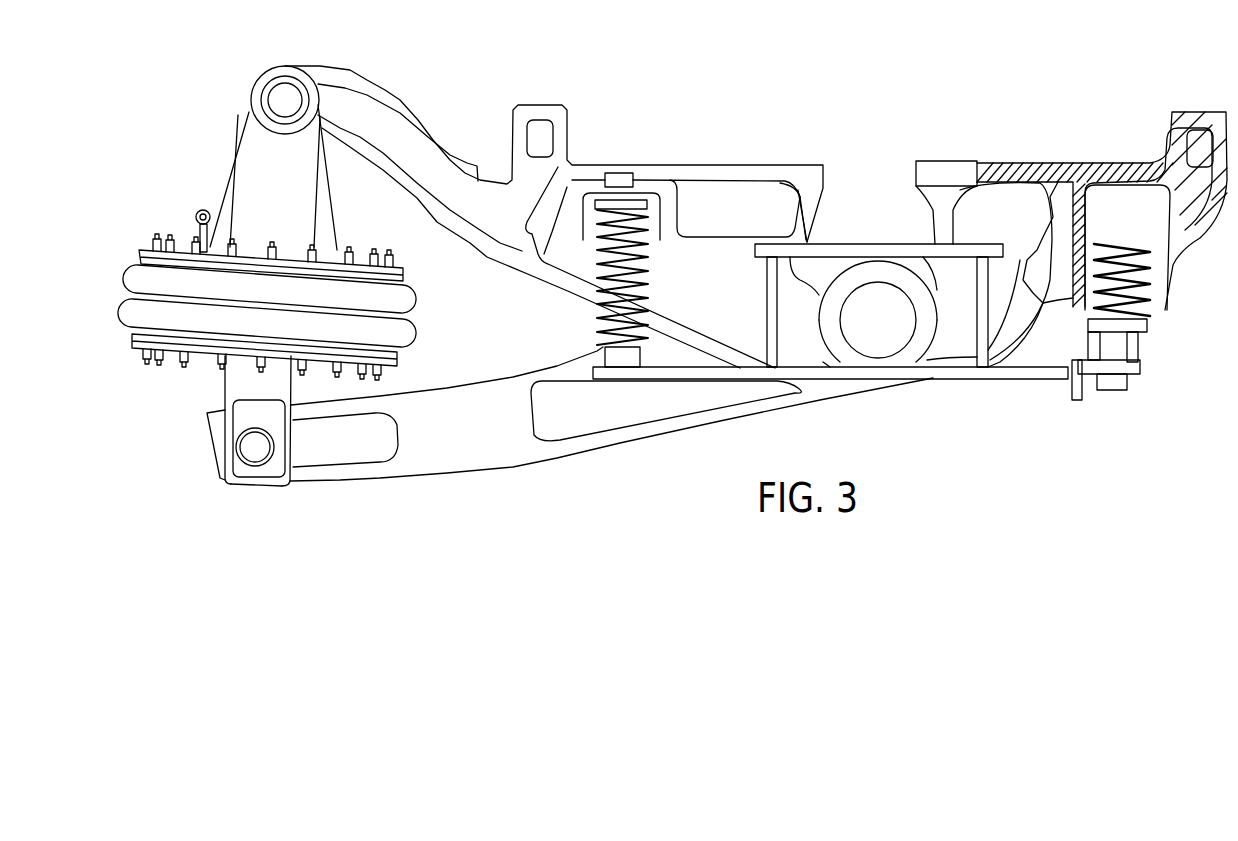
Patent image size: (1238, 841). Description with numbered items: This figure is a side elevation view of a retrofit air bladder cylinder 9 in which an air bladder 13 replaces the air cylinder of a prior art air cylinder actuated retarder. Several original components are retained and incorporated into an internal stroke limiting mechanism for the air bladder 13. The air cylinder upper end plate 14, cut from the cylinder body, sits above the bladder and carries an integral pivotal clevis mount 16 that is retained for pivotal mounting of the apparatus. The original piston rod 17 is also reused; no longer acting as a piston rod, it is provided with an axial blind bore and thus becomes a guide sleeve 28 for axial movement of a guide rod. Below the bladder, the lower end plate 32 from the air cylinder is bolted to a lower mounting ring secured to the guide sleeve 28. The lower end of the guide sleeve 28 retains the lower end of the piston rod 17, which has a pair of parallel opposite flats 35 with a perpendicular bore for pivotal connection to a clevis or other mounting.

The suspension assembly 9 is at (466, 100).
The air bladder 13 is at (128, 277).
The upper end plate 14 is at (182, 248).
The pivotal clevis mount 16 is at (262, 84).
The piston rod 17 is at (288, 384).
The guide sleeve 28 is at (243, 383).
The lower end plate 32 is at (178, 350).
The flats 35 is at (270, 473).